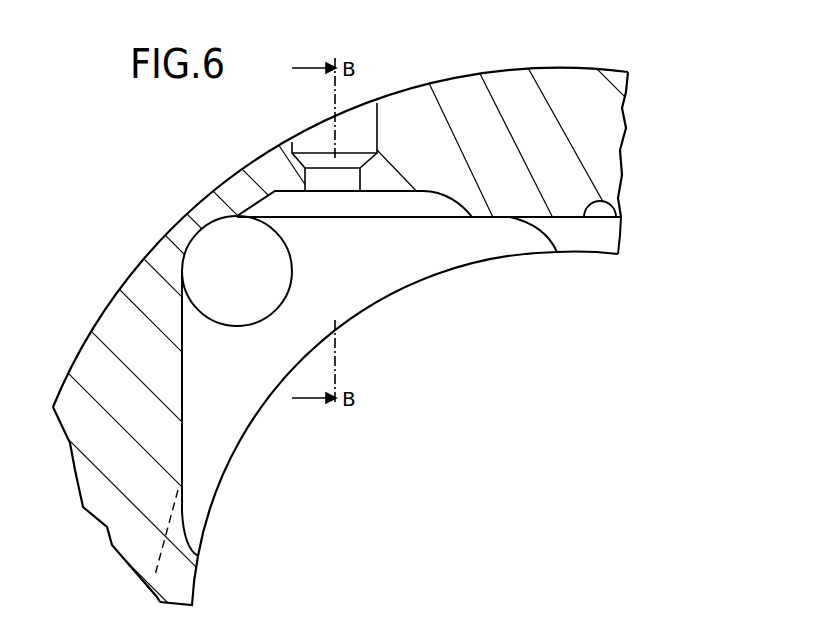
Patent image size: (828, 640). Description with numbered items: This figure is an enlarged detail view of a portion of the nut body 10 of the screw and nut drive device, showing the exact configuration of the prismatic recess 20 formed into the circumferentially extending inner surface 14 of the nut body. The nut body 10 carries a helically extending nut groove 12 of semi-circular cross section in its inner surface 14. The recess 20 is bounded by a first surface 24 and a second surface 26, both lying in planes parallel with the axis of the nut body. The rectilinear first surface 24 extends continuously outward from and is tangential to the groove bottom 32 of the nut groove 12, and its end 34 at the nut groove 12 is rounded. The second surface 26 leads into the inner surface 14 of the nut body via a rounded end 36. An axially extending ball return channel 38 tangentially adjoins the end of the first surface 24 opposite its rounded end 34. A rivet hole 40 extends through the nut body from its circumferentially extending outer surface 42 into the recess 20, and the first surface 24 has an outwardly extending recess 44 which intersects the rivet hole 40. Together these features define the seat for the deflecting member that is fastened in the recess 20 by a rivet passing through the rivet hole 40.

The nut body 10 is at (547, 100).
The nut groove 12 is at (588, 243).
The inner surface 14 is at (192, 588).
The prismatic recess 20 is at (428, 338).
The first surface 24 is at (450, 220).
The second surface 26 is at (183, 400).
The groove bottom 32 is at (618, 203).
The rounded end 34 is at (540, 240).
The rounded end 36 is at (183, 527).
The ball return channel 38 is at (233, 307).
The rivet hole 40 is at (328, 178).
The outer surface 42 is at (405, 82).
The outwardly extending recess 44 is at (397, 200).